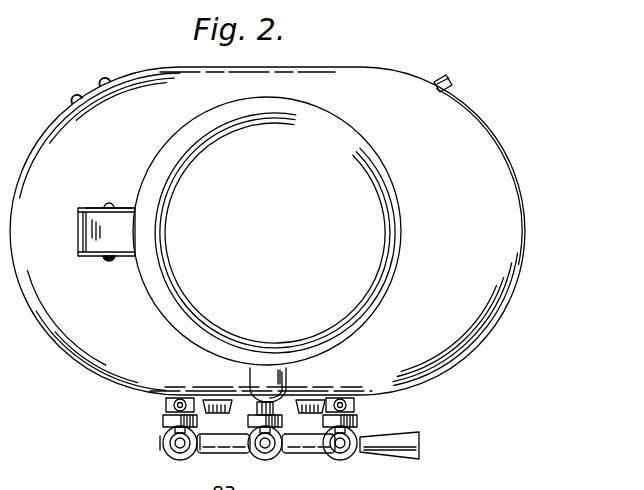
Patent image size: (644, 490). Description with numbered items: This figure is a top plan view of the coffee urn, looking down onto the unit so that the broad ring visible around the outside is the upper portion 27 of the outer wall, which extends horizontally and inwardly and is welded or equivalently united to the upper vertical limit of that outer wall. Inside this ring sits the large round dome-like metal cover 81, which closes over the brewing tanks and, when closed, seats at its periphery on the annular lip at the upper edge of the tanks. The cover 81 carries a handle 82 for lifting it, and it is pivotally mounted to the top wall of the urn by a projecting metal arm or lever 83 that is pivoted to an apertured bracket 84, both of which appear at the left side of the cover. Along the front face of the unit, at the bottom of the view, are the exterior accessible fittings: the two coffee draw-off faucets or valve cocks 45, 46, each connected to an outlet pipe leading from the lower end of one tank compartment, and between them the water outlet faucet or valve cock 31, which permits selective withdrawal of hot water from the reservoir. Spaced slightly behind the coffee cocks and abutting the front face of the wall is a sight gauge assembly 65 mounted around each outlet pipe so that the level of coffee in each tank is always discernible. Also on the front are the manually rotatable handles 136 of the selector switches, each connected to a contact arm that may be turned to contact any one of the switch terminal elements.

The upper portion of the outer wall 27 is at (472, 225).
The dome-like metal cover 81 is at (335, 191).
The handle 82 is at (283, 386).
The projecting metal arm or lever 83 is at (113, 237).
The apertured bracket 84 is at (92, 209).
The manually rotatable handle 136 is at (220, 400).
The sight gauge assembly 65 is at (348, 406).
The valve cock 45 is at (166, 445).
The water outlet faucet or valve cock 31 is at (268, 458).
The valve cock 46 is at (345, 455).